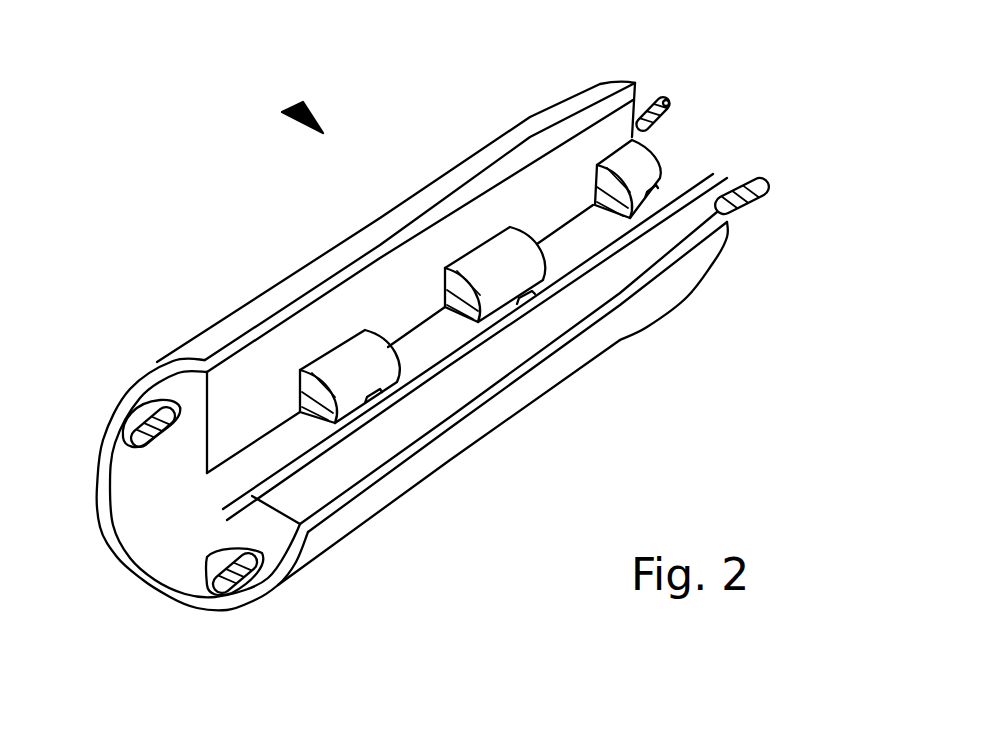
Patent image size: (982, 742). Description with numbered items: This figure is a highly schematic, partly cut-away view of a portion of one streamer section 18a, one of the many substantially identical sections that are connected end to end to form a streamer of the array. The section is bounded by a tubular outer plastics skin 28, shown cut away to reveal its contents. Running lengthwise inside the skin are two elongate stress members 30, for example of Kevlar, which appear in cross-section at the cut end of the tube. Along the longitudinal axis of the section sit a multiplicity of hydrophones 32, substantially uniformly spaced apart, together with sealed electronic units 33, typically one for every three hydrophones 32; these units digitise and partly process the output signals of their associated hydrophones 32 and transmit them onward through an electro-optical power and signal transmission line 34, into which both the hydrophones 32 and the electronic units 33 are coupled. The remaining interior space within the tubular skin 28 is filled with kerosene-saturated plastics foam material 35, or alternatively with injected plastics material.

The streamer section 18a is at (284, 106).
The tubular outer plastics skin 28 is at (279, 585).
The elongate stress members 30 is at (660, 97).
The hydrophones 32 is at (330, 352).
The sealed electronic units 33 is at (540, 247).
The electro-optical power and signal transmission line 34 is at (440, 371).
The kerosene-saturated plastics foam material 35 is at (567, 165).